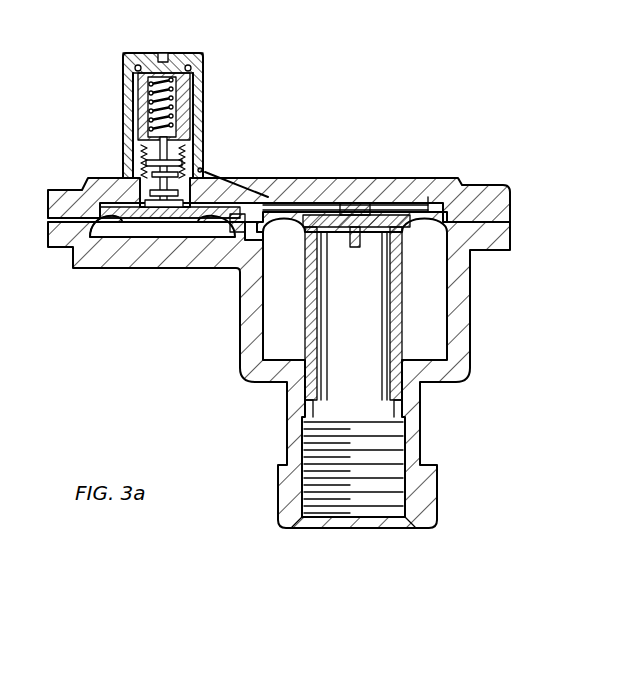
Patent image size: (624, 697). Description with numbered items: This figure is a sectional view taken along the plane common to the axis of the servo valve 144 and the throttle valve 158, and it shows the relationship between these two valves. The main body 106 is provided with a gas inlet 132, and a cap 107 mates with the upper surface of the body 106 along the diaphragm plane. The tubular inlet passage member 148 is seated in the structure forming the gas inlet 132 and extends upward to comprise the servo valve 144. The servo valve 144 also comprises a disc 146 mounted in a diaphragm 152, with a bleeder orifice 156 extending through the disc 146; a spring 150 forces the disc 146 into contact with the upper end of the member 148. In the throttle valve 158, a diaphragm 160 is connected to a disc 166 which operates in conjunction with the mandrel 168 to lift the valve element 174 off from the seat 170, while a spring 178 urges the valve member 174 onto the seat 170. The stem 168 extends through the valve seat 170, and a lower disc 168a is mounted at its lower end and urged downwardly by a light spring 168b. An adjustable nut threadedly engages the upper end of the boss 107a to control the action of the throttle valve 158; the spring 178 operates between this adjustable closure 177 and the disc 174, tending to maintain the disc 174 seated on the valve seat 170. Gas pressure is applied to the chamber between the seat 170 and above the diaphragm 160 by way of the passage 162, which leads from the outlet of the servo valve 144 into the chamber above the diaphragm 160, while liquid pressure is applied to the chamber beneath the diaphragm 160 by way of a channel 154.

The main body 106 is at (503, 242).
The cap 107 is at (505, 190).
The boss 107a is at (204, 70).
The gas inlet 132 is at (358, 488).
The servo valve 144 is at (312, 229).
The disc 146 is at (393, 232).
The tubular inlet passage member 148 is at (305, 312).
The spring 150 is at (365, 203).
The diaphragm 152 is at (427, 197).
The channel 154 is at (235, 170).
The bleeder orifice 156 is at (355, 247).
The throttle valve 158 is at (72, 92).
The diaphragm 160 is at (97, 240).
The passage 162 is at (268, 200).
The disc 166 is at (122, 236).
The mandrel 168 is at (128, 180).
The lower disc 168a is at (160, 230).
The light spring 168b is at (180, 230).
The valve seat 170 is at (200, 178).
The valve element 174 is at (140, 172).
The adjustable closure 177 is at (178, 53).
The spring 178 is at (170, 108).